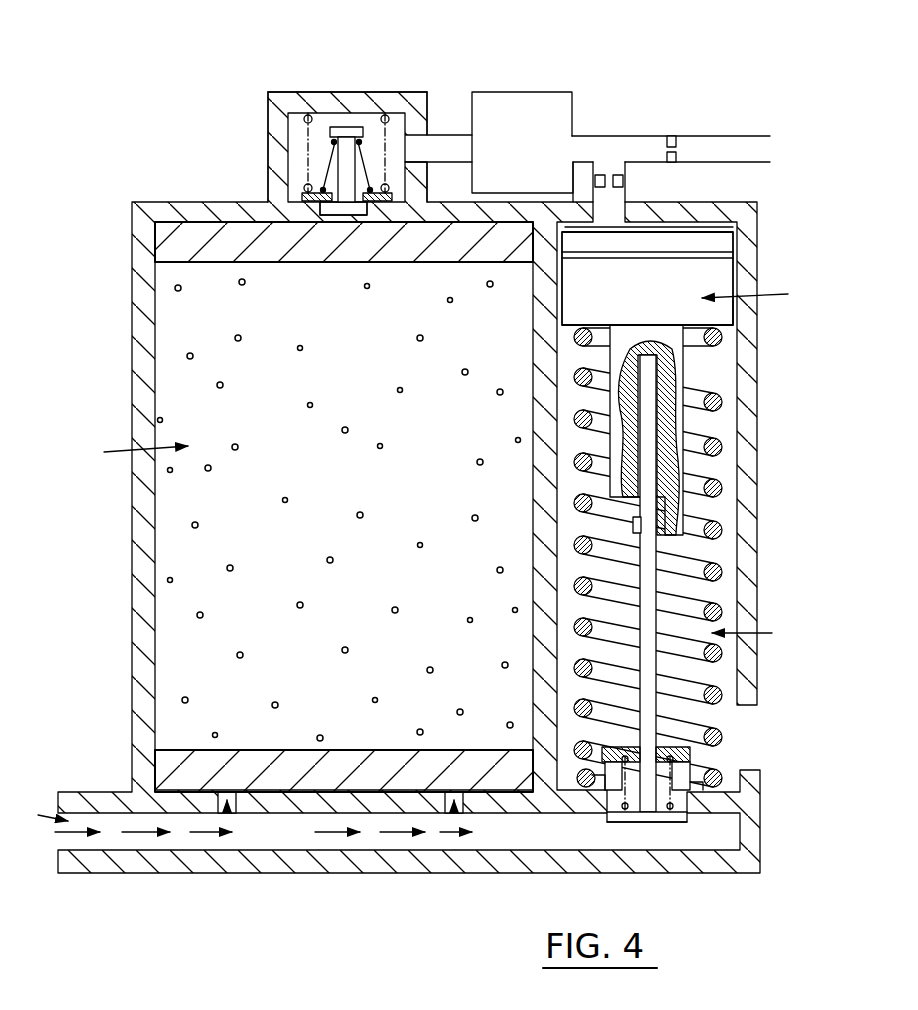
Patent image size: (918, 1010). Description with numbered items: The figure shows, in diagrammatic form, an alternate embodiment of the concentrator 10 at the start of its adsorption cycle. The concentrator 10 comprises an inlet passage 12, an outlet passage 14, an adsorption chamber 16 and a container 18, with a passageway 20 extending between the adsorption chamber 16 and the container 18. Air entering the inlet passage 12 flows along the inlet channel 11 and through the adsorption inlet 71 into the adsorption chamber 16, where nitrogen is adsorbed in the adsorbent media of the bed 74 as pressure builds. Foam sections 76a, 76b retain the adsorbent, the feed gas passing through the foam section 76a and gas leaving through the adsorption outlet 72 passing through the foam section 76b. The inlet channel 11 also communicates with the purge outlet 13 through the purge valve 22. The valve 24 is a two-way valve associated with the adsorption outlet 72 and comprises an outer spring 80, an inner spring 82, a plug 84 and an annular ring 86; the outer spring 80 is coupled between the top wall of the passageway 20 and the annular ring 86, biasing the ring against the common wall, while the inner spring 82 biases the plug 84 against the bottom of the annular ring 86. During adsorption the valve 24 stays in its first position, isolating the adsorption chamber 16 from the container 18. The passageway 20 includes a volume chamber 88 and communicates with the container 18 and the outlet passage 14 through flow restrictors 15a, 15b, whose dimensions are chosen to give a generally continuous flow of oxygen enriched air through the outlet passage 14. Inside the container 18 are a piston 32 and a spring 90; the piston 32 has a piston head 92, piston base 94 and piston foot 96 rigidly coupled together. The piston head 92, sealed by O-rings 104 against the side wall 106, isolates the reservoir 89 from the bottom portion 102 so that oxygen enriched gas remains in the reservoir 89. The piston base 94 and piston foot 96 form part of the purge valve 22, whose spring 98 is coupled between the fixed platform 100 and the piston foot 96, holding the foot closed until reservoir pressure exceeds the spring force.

The concentrator 10 is at (198, 890).
The inlet channel 11 is at (303, 852).
The inlet passage 12 is at (37, 795).
The purge outlet 13 is at (750, 738).
The outlet passage 14 is at (767, 150).
The flow restrictor 15a is at (677, 152).
The flow restrictor 15b is at (608, 176).
The adsorption chamber 16 is at (130, 452).
The container 18 is at (729, 378).
The passageway 20 is at (452, 92).
The purge valve 22 is at (605, 821).
The valve 24 is at (297, 147).
The piston 32 is at (763, 293).
The adsorption inlet 71 is at (235, 808).
The adsorption outlet 72 is at (305, 200).
The bed 74 is at (165, 593).
The foam section 76a is at (160, 766).
The foam section 76b is at (158, 240).
The outer spring 80 is at (386, 134).
The inner spring 82 is at (323, 150).
The plug 84 is at (349, 127).
The annular ring 86 is at (395, 198).
The volume chamber 88 is at (530, 100).
The reservoir 89 is at (727, 228).
The spring 90 is at (718, 484).
The piston head 92 is at (723, 265).
The piston base 94 is at (657, 608).
The piston foot 96 is at (674, 822).
The spring 98 is at (600, 748).
The platform 100 is at (668, 748).
The bottom portion 102 is at (769, 633).
The O-ring 104 is at (727, 253).
The side wall 106 is at (727, 310).